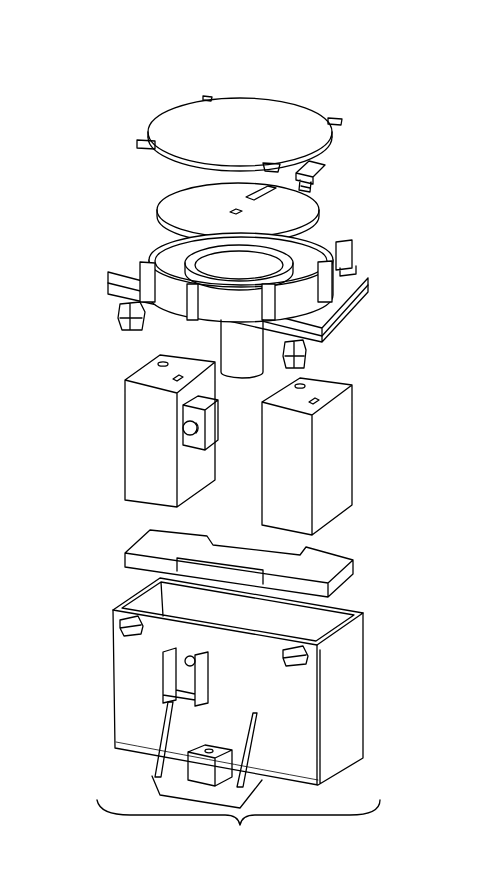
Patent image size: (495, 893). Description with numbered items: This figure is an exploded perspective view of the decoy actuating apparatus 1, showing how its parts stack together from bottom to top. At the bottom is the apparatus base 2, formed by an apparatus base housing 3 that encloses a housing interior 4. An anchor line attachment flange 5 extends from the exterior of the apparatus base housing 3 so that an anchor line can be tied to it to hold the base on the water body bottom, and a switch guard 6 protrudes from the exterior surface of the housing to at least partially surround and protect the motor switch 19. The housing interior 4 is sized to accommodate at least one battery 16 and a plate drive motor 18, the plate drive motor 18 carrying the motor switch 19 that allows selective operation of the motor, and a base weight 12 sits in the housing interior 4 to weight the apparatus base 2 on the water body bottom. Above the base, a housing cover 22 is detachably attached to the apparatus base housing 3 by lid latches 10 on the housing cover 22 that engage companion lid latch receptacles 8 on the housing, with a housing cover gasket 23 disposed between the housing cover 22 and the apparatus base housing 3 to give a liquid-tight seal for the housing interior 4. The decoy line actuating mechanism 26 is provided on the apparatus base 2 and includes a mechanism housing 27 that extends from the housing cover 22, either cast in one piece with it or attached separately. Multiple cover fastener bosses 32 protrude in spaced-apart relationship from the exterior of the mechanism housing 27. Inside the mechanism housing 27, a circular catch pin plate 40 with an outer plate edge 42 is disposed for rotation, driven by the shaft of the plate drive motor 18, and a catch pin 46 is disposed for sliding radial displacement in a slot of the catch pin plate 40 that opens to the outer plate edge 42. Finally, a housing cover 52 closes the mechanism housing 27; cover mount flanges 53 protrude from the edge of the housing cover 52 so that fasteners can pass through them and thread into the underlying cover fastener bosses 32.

The decoy actuating apparatus 1 is at (117, 78).
The apparatus base 2 is at (379, 640).
The apparatus base housing 3 is at (366, 713).
The housing interior 4 is at (338, 620).
The anchor line attachment flange 5 is at (190, 770).
The switch guard 6 is at (135, 672).
The lid latch receptacles 8 is at (120, 626).
The lid latches 10 is at (118, 316).
The base weight 12 is at (327, 562).
The battery 16 is at (125, 432).
The plate drive motor 18 is at (222, 348).
The motor switch 19 is at (195, 429).
The housing cover 22 is at (355, 273).
The housing cover gasket 23 is at (340, 322).
The decoy line actuating mechanism 26 is at (303, 91).
The mechanism housing 27 is at (160, 276).
The cover fastener bosses 32 is at (343, 252).
The catch pin plate 40 is at (155, 224).
The outer plate edge 42 is at (190, 208).
The catch pin 46 is at (324, 173).
The housing cover 52 is at (255, 108).
The cover mount flanges 53 is at (206, 96).